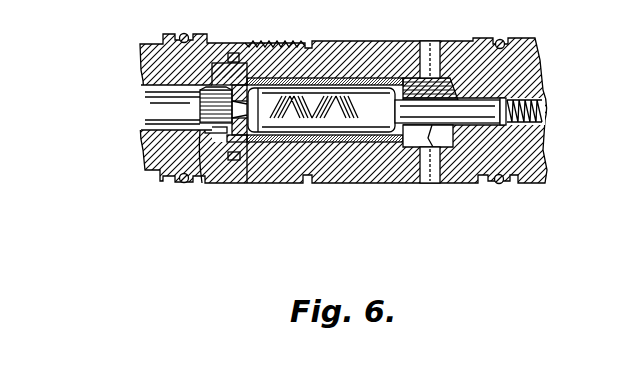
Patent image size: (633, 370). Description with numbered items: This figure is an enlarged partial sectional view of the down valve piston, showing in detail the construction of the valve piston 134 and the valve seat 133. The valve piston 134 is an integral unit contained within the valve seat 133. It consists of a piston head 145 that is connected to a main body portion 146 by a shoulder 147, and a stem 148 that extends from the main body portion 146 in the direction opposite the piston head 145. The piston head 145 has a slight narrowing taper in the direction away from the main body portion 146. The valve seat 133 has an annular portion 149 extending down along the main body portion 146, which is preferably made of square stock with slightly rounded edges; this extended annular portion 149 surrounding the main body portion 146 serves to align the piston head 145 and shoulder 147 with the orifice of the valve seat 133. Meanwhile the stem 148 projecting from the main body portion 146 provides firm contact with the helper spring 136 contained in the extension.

The valve seat 133 is at (238, 82).
The valve piston 134 is at (193, 117).
The helper spring 136 is at (545, 108).
The piston head 145 is at (205, 130).
The main body portion 146 is at (336, 136).
The shoulder 147 is at (247, 142).
The stem 148 is at (430, 183).
The annular portion 149 is at (367, 76).